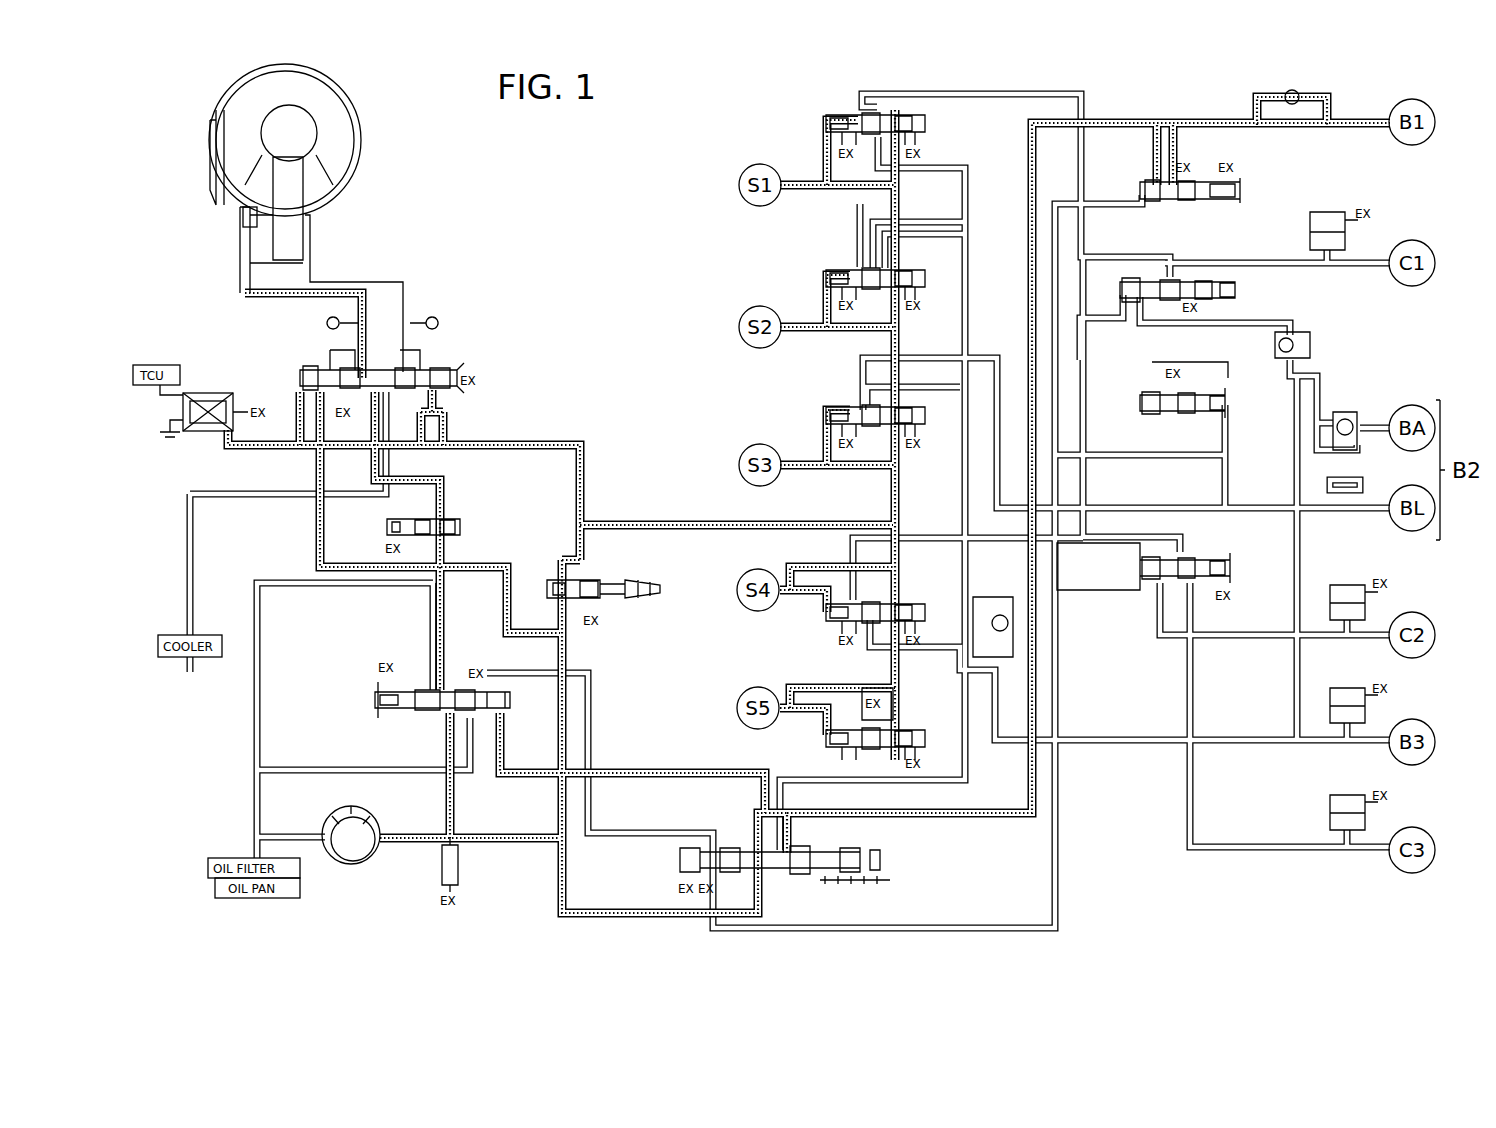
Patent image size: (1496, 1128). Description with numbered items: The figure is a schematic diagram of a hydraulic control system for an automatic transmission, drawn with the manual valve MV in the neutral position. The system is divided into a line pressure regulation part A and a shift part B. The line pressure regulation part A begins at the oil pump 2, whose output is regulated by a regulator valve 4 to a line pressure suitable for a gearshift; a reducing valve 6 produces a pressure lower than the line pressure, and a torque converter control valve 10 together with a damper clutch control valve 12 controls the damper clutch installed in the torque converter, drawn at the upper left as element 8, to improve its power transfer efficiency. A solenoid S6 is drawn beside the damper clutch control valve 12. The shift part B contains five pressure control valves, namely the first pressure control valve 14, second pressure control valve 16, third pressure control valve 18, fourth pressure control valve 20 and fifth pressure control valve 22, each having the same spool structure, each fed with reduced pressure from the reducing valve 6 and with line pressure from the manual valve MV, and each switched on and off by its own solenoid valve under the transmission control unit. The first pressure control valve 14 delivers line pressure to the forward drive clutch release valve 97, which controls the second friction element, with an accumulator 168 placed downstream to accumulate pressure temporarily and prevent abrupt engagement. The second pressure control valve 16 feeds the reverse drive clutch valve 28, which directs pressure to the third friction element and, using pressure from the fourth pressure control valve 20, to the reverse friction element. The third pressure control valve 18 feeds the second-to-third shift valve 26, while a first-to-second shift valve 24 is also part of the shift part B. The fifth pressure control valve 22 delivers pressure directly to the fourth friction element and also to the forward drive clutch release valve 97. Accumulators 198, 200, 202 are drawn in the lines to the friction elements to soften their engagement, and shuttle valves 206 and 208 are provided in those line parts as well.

The oil pump 2 is at (354, 876).
The regulator valve 4 is at (352, 709).
The reducing valve 6 is at (628, 622).
The torque converter 8 is at (392, 147).
The torque converter control valve 10 is at (474, 531).
The damper clutch control valve 12 is at (468, 352).
The first pressure control valve 14 is at (808, 127).
The second pressure control valve 16 is at (808, 282).
The third pressure control valve 18 is at (808, 419).
The fourth pressure control valve 20 is at (810, 620).
The fifth pressure control valve 22 is at (807, 746).
The first-to-second shift valve 24 is at (1252, 196).
The second-to-third shift valve 26 is at (1242, 409).
The reverse drive clutch valve 28 is at (1125, 574).
The forward drive clutch release valve 97 is at (1257, 294).
The accumulator 168 is at (1292, 237).
The accumulator 198 is at (1349, 573).
The accumulator 200 is at (1349, 677).
The accumulator 202 is at (1349, 784).
The shuttle valve 206 is at (1332, 351).
The shuttle valve 208 is at (1349, 399).
The line pressure regulation part A is at (516, 257).
The shift part B is at (681, 139).
The solenoid valve S6 is at (211, 380).
The manual valve MV is at (662, 864).